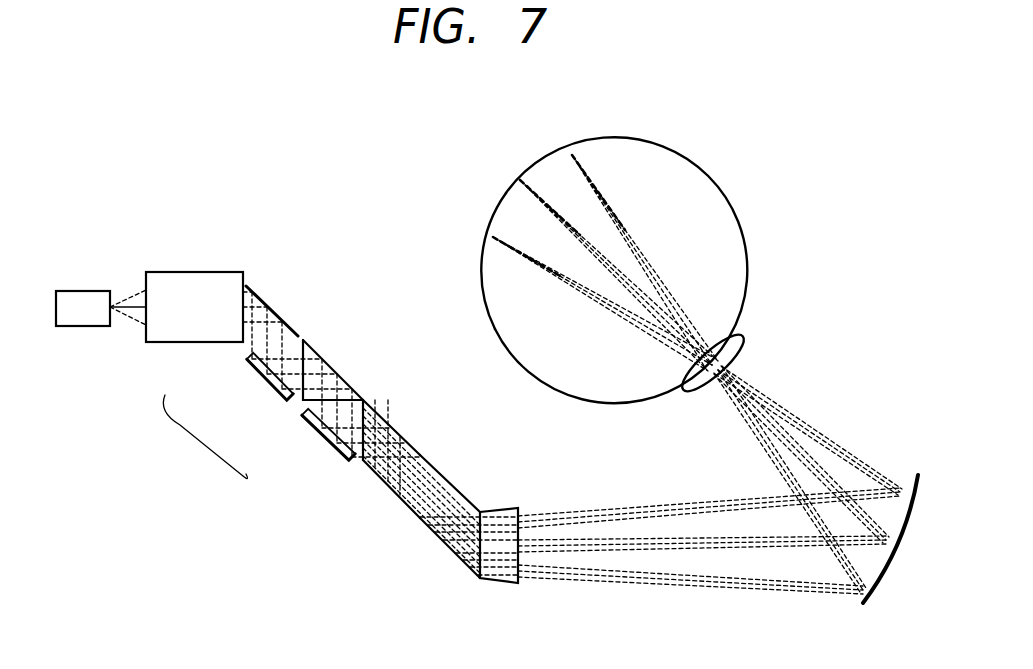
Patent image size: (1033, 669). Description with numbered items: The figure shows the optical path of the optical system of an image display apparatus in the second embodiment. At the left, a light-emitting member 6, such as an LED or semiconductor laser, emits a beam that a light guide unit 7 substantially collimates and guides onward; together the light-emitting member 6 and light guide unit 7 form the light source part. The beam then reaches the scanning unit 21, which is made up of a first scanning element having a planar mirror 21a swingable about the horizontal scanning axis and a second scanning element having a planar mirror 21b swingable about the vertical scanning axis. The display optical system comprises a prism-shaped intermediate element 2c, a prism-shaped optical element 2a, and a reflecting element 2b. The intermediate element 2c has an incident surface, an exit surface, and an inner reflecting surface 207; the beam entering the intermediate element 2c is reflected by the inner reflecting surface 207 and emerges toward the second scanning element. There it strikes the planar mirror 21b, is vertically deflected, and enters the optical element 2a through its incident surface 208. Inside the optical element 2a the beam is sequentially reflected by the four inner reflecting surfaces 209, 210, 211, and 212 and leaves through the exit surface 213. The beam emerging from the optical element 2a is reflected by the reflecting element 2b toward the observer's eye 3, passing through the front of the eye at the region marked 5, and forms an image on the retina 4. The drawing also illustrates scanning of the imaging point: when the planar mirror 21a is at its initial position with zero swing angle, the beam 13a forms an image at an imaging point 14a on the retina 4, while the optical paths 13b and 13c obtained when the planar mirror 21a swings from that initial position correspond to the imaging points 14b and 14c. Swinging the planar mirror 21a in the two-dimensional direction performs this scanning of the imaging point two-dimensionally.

The optical element 2a is at (363, 592).
The reflecting element 2b is at (873, 588).
The intermediate element 2c is at (323, 370).
The observer's eye 3 is at (747, 230).
The retina 4 is at (502, 210).
The cornea 5 is at (713, 343).
The light-emitting member 6 is at (80, 290).
The light guide unit 7 is at (183, 272).
The beam 13a is at (820, 470).
The optical path 13b is at (840, 593).
The optical path 13c is at (800, 417).
The imaging point 14a is at (520, 180).
The imaging point 14b is at (572, 155).
The imaging point 14c is at (493, 237).
The scanning unit 21 is at (255, 416).
The planar mirror 21a is at (265, 382).
The planar mirror 21b is at (322, 437).
The inner reflecting surface 207 is at (338, 362).
The incident surface 208 is at (360, 457).
The inner reflecting surface 209 is at (408, 437).
The inner reflecting surface 210 is at (398, 495).
The inner reflecting surface 211 is at (465, 490).
The inner reflecting surface 212 is at (447, 538).
The exit surface 213 is at (522, 583).